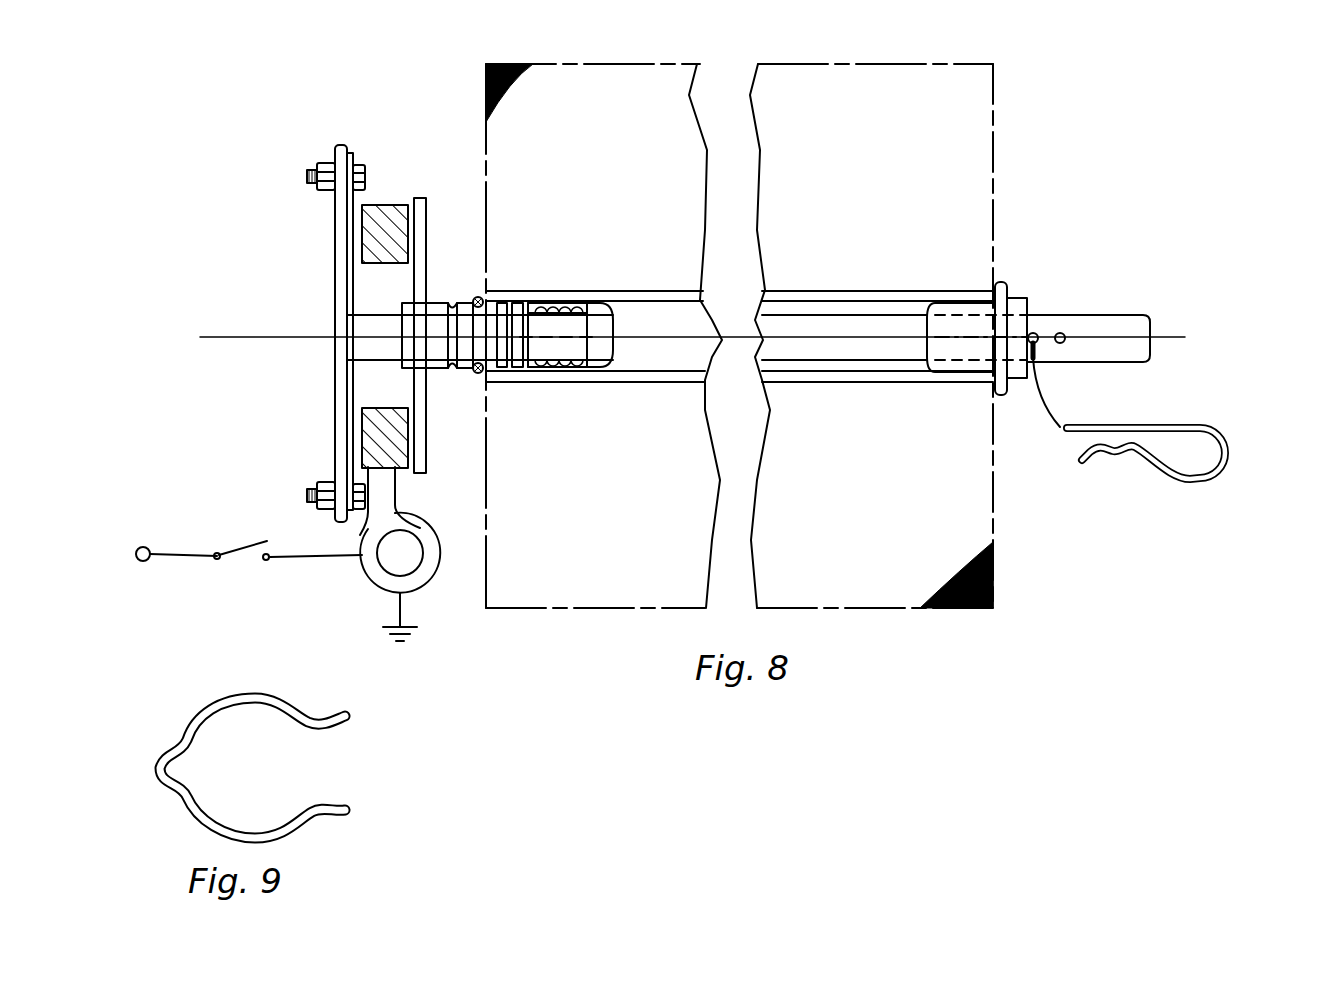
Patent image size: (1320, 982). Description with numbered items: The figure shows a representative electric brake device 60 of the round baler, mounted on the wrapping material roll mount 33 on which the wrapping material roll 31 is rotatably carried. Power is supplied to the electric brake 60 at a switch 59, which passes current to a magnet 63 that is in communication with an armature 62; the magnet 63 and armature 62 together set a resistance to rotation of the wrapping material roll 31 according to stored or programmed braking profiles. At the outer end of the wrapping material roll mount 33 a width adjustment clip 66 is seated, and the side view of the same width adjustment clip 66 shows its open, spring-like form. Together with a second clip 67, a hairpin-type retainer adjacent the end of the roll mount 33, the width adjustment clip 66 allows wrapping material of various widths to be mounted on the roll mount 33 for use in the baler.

In FIG. 8, the wrapping material roll 31 is at (940, 140).
In FIG. 8, the wrapping material roll mount 33 is at (1115, 328).
In FIG. 8, the switch 59 is at (240, 548).
In FIG. 8, the brake device 60 is at (349, 292).
In FIG. 8, the armature 62 is at (385, 203).
In FIG. 8, the magnet 63 is at (428, 226).
In FIG. 8, the width adjustment clip 66 is at (460, 385).
In FIG. 9, the width adjustment clip 66 is at (291, 768).
In FIG. 8, the second clip 67 is at (1179, 438).